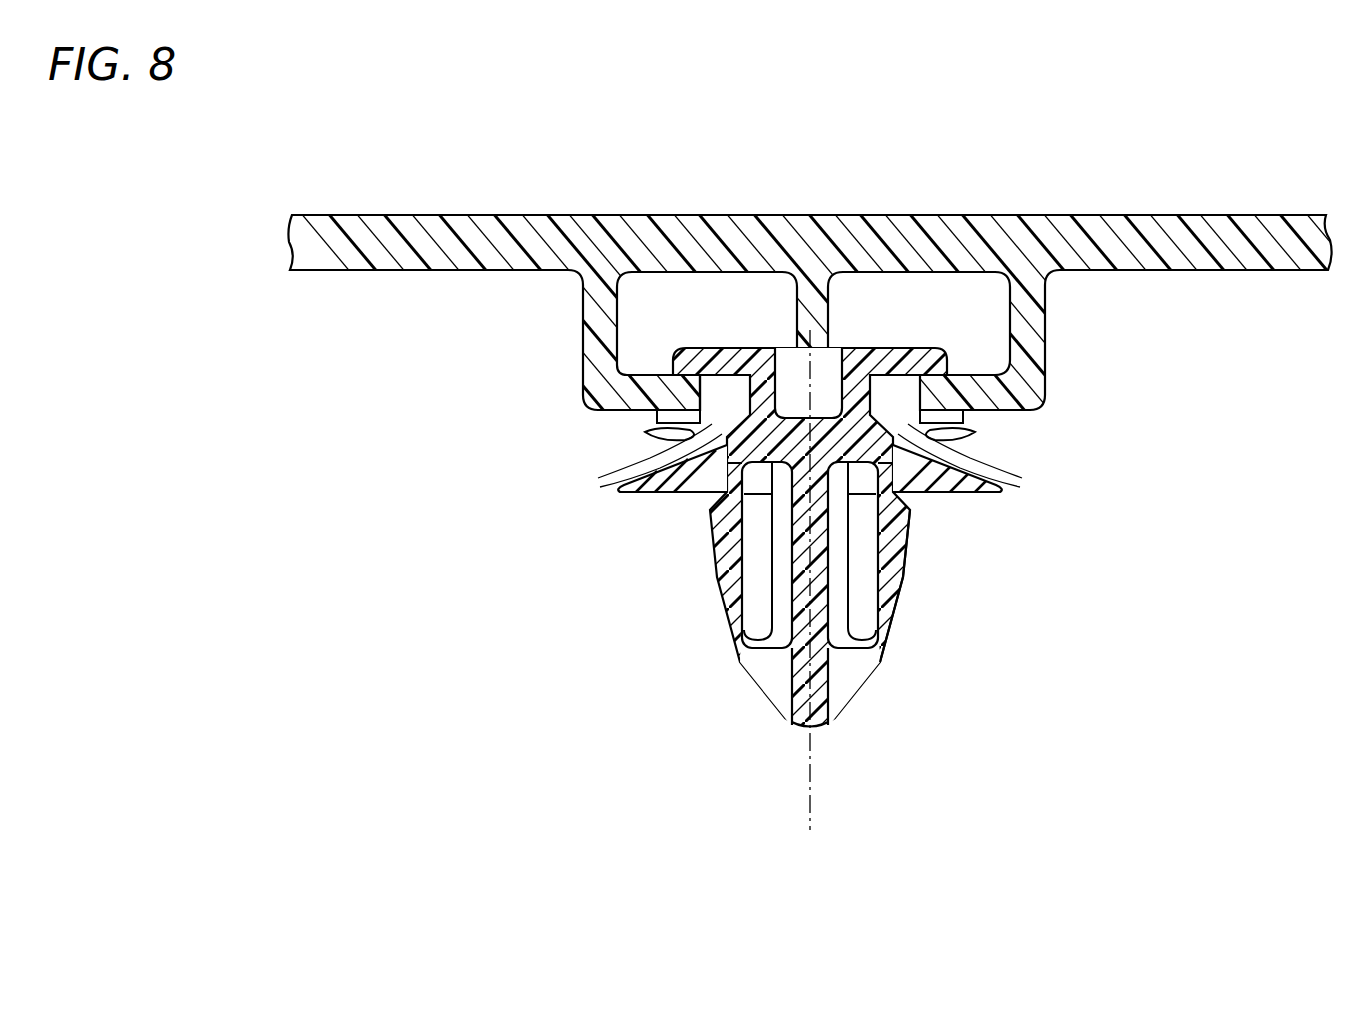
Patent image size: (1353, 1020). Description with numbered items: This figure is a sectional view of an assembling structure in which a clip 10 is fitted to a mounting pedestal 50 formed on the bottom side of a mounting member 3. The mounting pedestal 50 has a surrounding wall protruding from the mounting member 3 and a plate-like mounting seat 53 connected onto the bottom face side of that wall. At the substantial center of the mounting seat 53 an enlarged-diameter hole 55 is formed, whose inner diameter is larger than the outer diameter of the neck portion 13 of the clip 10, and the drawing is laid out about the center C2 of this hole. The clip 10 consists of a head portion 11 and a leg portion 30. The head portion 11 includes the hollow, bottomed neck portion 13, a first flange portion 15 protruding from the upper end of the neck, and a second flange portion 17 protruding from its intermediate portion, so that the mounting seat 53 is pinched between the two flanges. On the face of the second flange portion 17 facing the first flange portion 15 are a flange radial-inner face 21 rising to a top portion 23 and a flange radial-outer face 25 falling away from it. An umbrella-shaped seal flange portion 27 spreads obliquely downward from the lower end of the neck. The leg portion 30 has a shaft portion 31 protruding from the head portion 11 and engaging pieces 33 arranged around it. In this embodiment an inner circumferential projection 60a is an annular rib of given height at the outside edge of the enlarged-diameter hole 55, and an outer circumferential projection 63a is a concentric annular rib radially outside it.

The mounting member 3 is at (1282, 247).
The clip 10 is at (897, 324).
The head portion 11 is at (716, 342).
The neck portion 13 is at (857, 398).
The first flange portion 15 is at (927, 348).
The second flange portion 17 is at (934, 458).
The flange radial-inner face 21 is at (692, 450).
The top portion 23 is at (695, 431).
The flange radial-outer face 25 is at (665, 438).
The seal flange portion 27 is at (962, 484).
The leg portion 30 is at (912, 652).
The shaft portion 31 is at (824, 662).
The engaging piece 33 is at (896, 583).
The mounting pedestal 50 is at (1056, 315).
The mounting seat 53 is at (960, 398).
The enlarged-diameter hole 55 is at (690, 372).
The inner circumferential projection 60a is at (700, 387).
The outer circumferential projection 63a is at (648, 432).
The center of the enlarged-diameter hole C2 is at (815, 803).